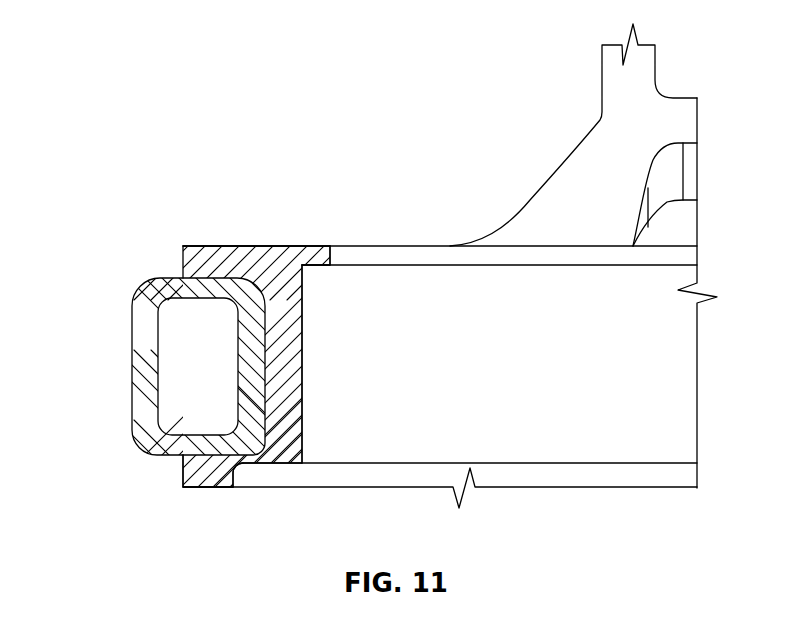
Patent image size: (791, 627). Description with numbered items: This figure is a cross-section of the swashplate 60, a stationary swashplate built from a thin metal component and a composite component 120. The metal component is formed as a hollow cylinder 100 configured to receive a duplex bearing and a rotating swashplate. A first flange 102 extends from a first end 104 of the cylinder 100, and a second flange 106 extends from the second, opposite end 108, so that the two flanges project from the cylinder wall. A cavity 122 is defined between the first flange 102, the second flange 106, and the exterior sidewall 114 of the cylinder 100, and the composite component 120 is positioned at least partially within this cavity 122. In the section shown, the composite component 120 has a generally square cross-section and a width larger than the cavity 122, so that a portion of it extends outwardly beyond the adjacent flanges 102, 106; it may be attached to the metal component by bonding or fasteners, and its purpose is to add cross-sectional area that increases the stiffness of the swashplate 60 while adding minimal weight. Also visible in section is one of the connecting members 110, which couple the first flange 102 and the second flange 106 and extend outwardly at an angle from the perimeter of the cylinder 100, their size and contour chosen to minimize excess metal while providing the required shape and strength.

The swashplate 60 is at (243, 118).
The hollow cylinder 100 is at (297, 248).
The first flange 102 is at (245, 246).
The first end 104 is at (312, 248).
The second flange 106 is at (203, 483).
The second end 108 is at (280, 463).
The connecting member 110 is at (592, 146).
The exterior sidewall 114 is at (263, 327).
The composite component 120 is at (132, 365).
The cavity 122 is at (236, 455).